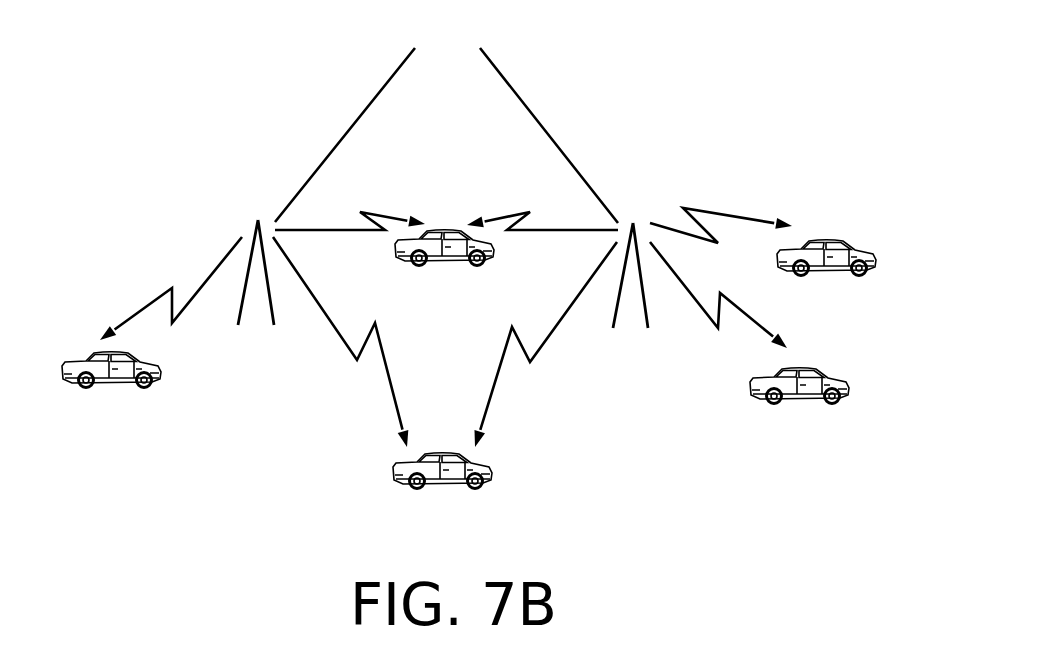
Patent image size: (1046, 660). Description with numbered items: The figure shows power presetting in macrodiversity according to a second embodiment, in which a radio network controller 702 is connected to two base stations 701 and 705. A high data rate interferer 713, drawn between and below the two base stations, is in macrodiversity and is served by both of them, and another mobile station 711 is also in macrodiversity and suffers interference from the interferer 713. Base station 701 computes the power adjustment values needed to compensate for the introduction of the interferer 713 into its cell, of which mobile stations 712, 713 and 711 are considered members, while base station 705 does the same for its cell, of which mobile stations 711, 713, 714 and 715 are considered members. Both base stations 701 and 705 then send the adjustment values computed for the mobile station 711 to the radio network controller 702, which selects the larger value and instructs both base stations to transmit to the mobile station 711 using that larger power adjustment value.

The base station 701 is at (230, 192).
The radio network controller 702 is at (472, 33).
The base station 705 is at (662, 182).
The mobile station in macrodiversity 711 is at (458, 232).
The mobile station 712 is at (148, 385).
The high data rate interferer 713 is at (485, 485).
The mobile station 714 is at (855, 248).
The mobile station 715 is at (842, 397).